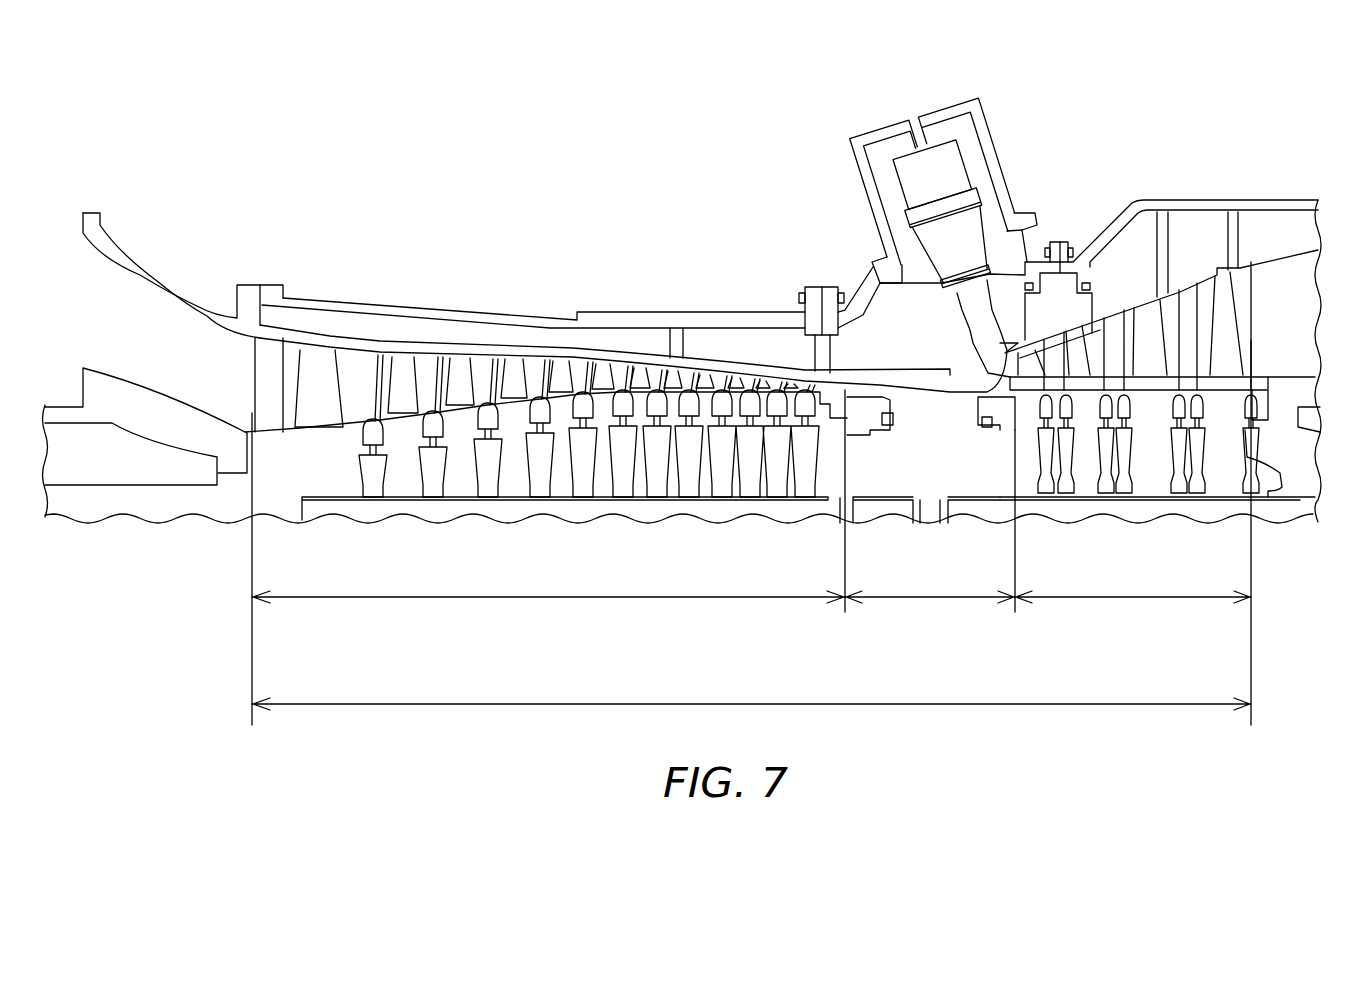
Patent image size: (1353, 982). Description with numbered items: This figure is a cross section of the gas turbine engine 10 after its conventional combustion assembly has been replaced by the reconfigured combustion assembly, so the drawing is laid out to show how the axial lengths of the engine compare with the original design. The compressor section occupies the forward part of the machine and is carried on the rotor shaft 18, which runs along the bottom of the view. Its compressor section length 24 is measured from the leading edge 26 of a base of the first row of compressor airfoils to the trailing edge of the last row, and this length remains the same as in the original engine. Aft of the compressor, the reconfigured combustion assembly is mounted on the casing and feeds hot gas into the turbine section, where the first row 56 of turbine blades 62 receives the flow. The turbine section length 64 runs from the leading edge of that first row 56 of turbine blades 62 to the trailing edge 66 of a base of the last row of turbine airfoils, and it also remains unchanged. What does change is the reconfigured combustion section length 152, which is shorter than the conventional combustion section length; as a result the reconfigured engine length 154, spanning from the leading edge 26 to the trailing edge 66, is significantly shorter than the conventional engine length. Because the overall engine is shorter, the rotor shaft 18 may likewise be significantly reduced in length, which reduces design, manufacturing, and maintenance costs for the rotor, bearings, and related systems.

The gas turbine engine 10 is at (682, 335).
The rotor shaft 18 is at (443, 505).
The compressor section length 24 is at (550, 597).
The leading edge 26 is at (252, 648).
The first row of turbine blades 56 is at (943, 284).
The turbine blades 62 is at (1030, 364).
The turbine section length 64 is at (1130, 597).
The trailing edge 66 is at (1252, 650).
The reconfigured combustion section length 152 is at (902, 597).
The reconfigured engine length 154 is at (755, 704).